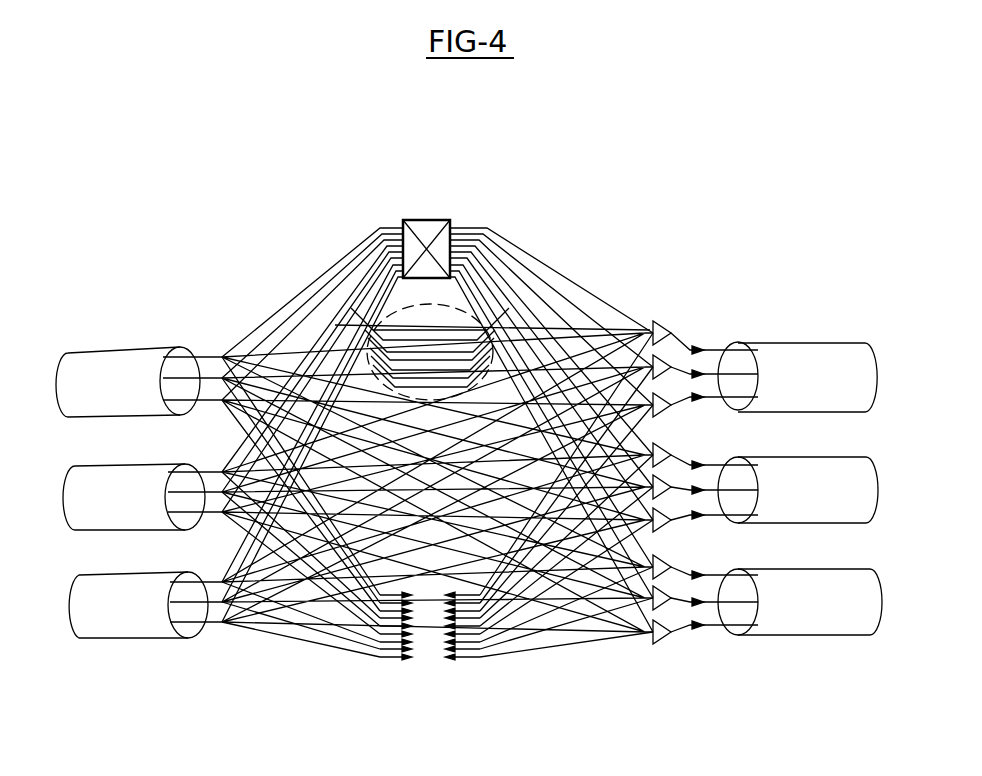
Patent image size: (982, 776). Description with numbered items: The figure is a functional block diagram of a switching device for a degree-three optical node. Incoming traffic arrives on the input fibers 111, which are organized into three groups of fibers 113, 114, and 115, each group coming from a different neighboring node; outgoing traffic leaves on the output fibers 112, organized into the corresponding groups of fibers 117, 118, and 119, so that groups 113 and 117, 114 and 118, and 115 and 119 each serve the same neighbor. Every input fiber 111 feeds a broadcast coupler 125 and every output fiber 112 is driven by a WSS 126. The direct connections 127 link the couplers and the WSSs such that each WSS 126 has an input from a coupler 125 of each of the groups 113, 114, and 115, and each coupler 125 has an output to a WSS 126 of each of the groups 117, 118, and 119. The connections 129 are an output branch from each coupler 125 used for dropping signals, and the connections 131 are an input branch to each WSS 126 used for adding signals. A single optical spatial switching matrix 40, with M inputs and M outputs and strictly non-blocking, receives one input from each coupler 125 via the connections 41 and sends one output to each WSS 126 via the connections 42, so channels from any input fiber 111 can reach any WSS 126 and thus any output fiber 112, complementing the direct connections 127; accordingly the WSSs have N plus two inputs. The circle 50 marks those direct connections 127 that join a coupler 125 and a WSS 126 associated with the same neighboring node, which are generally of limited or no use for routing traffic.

The optical spatial switching matrix 40 is at (424, 220).
The connections 41 is at (318, 262).
The connections 42 is at (536, 256).
The circle 50 is at (395, 305).
The input fibers 111 is at (213, 355).
The output fibers 112 is at (717, 349).
The group of input fibers 113 is at (105, 348).
The group of input fibers 114 is at (107, 462).
The group of input fibers 115 is at (115, 575).
The group of output fibers 117 is at (800, 342).
The group of output fibers 118 is at (815, 458).
The group of output fibers 119 is at (820, 568).
The broadcast coupler 125 is at (220, 352).
The WSS 126 is at (660, 322).
The direct connections 127 is at (417, 580).
The connections 129 is at (328, 648).
The connections 131 is at (530, 655).